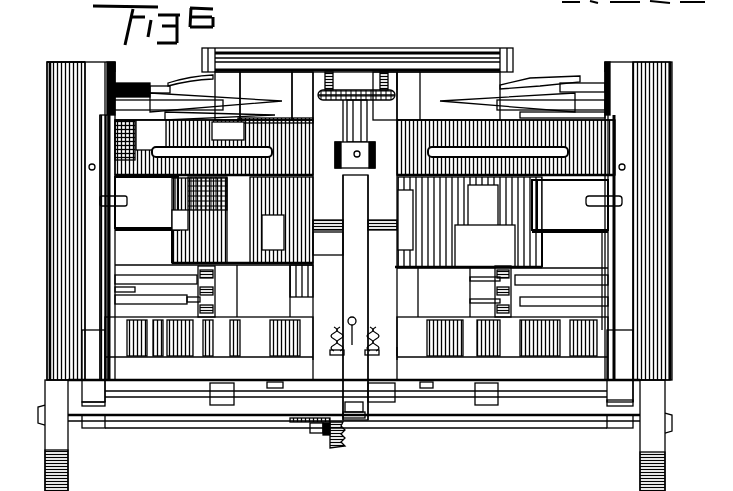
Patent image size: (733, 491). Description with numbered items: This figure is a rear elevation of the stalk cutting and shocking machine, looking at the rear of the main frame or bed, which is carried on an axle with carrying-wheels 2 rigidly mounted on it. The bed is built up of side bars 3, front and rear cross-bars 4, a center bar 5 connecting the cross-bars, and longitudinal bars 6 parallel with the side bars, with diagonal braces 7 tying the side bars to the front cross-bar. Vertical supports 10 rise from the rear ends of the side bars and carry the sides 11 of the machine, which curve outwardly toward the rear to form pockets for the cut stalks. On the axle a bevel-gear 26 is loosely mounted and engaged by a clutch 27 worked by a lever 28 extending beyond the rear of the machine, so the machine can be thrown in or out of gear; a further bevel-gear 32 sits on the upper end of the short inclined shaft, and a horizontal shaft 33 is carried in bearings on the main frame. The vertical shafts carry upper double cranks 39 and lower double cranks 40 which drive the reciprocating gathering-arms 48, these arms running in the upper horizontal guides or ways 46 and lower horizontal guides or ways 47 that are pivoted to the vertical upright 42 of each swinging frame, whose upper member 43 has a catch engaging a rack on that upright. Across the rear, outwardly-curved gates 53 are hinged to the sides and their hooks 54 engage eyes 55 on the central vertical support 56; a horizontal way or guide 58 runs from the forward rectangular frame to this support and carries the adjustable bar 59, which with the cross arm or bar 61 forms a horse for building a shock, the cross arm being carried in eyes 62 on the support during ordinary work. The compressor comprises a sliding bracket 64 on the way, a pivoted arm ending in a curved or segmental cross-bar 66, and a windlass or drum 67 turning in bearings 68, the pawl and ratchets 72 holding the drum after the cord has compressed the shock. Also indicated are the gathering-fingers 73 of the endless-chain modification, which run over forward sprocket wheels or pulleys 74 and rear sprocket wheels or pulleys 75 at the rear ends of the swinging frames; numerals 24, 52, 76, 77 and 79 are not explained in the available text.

The carrying-wheels 2 is at (640, 446).
The side bars 3 is at (106, 403).
The cross-bars 4 is at (228, 414).
The center bar 5 is at (390, 397).
The longitudinal bars 6 is at (363, 397).
The diagonal braces 7 is at (354, 412).
The vertical supports 10 is at (357, 366).
The sides 11 is at (80, 80).
The lever arm 24 is at (190, 88).
The bevel-gear 26 is at (323, 442).
The clutch 27 is at (326, 437).
The lever 28 is at (312, 432).
The bevel-gear 32 is at (366, 328).
The horizontal shaft 33 is at (398, 350).
The upper double cranks 39 is at (357, 97).
The lower double cranks 40 is at (213, 293).
The vertical upright 42 is at (113, 66).
The upper member 43 is at (361, 220).
The upper horizontal guides or ways 46 is at (135, 84).
The lower horizontal guides or ways 47 is at (143, 279).
The reciprocating gathering-arms 48 is at (170, 98).
The cross bar 52 is at (356, 348).
The outwardly-curved gates 53 is at (365, 147).
The hooks 54 is at (342, 178).
The eyes 55 is at (353, 168).
The vertical support 56 is at (370, 218).
The horizontal way or guide 58 is at (385, 96).
The adjustable bar 59 is at (353, 111).
The cross arm or bar 61 is at (360, 325).
The eyes 62 is at (340, 330).
The sliding bracket 64 is at (344, 122).
The curved or segmental cross-bar 66 is at (375, 91).
The windlass or drum 67 is at (355, 88).
The bearings 68 is at (330, 74).
The pawl and ratchets 72 is at (398, 80).
The gathering-fingers 73 is at (354, 232).
The forward sprocket wheels or pulleys 74 is at (266, 96).
The rear sprocket wheels or pulleys 75 is at (302, 216).
The top bar 76 is at (357, 60).
The block 77 is at (328, 237).
The block 79 is at (357, 222).